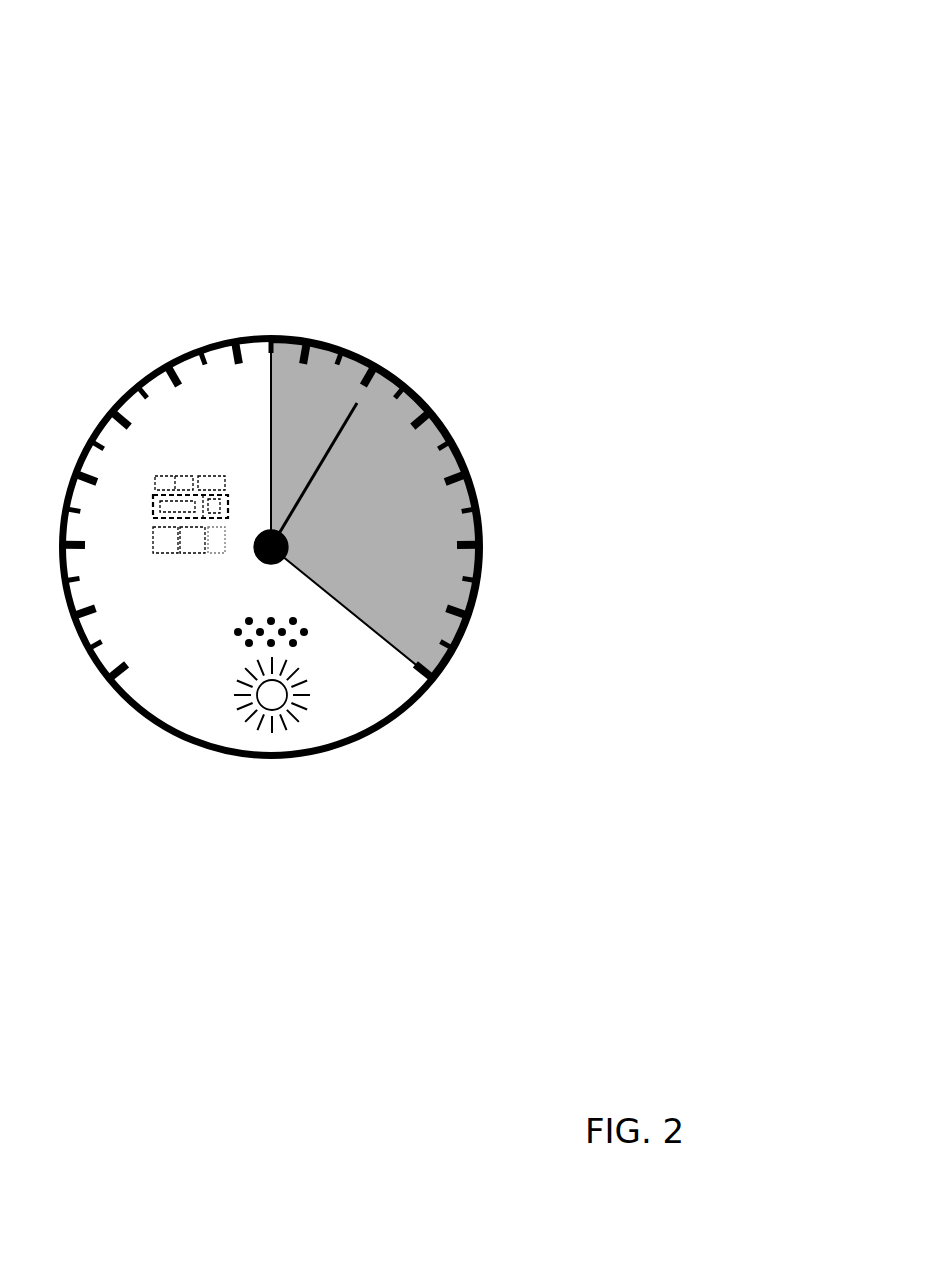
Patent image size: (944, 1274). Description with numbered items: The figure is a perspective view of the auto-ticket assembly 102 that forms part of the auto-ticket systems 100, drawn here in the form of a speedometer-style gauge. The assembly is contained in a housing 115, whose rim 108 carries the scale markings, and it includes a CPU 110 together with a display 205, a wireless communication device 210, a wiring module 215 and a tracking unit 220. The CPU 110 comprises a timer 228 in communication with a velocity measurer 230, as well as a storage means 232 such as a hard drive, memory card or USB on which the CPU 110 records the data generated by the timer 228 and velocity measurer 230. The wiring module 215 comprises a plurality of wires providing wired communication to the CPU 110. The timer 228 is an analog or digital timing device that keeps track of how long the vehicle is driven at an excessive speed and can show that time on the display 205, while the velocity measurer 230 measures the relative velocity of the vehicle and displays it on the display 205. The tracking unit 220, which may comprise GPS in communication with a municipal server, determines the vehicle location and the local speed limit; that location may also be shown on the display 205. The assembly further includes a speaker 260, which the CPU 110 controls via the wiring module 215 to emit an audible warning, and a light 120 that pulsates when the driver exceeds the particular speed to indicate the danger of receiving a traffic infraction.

The auto-ticket system 100 is at (481, 86).
The auto-ticket assembly 102 is at (523, 126).
The gauge rim / bezel 108 is at (214, 335).
The housing 115 is at (148, 365).
The CPU 110 is at (148, 507).
The storage means 232 is at (171, 475).
The wireless communication device 210 is at (212, 478).
The wiring module 215 is at (220, 494).
The timer 228 is at (165, 552).
The velocity measurer 230 is at (197, 555).
The tracking unit 220 is at (226, 552).
The display 205 is at (205, 699).
The light 120 is at (255, 710).
The speaker 260 is at (310, 647).